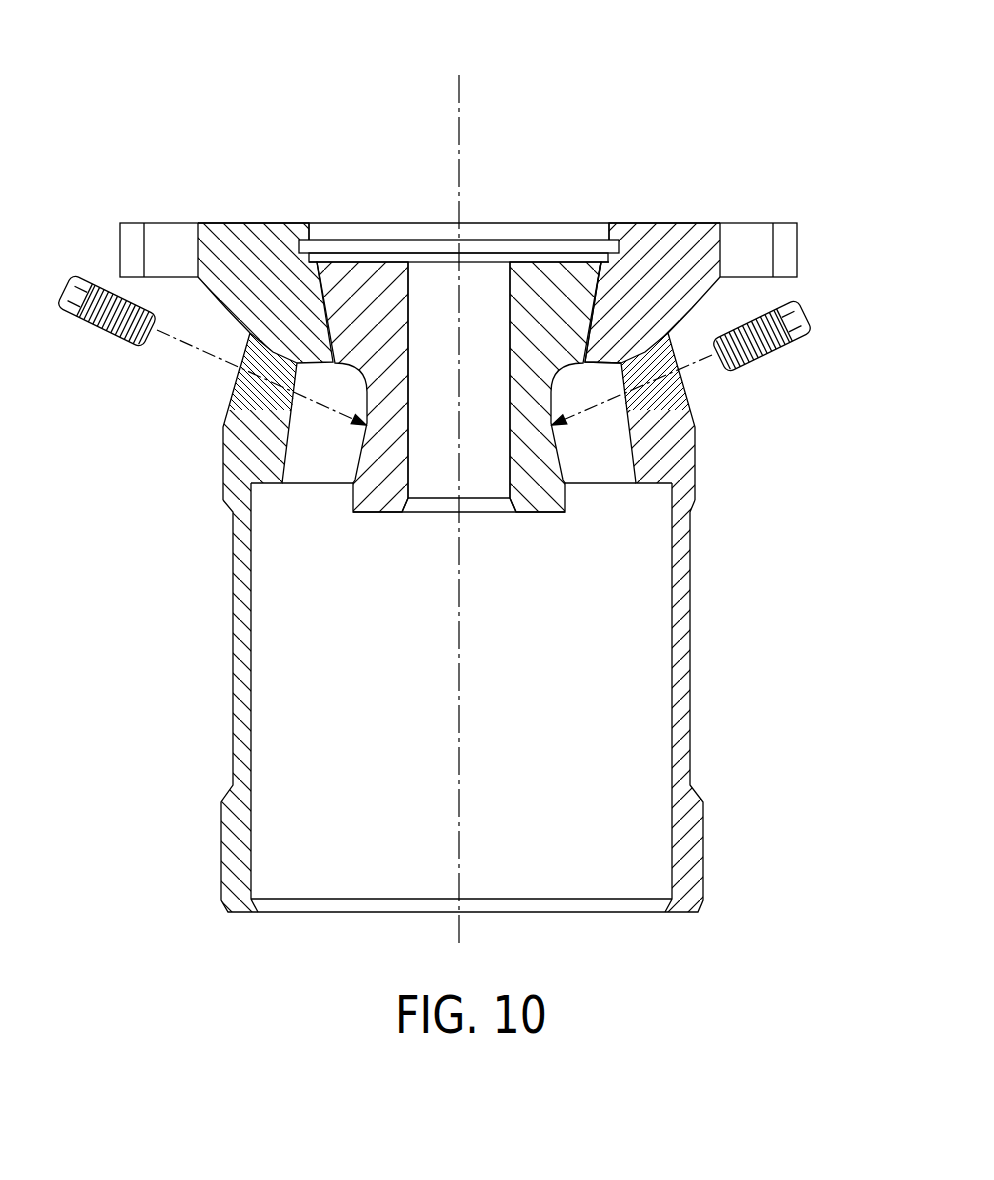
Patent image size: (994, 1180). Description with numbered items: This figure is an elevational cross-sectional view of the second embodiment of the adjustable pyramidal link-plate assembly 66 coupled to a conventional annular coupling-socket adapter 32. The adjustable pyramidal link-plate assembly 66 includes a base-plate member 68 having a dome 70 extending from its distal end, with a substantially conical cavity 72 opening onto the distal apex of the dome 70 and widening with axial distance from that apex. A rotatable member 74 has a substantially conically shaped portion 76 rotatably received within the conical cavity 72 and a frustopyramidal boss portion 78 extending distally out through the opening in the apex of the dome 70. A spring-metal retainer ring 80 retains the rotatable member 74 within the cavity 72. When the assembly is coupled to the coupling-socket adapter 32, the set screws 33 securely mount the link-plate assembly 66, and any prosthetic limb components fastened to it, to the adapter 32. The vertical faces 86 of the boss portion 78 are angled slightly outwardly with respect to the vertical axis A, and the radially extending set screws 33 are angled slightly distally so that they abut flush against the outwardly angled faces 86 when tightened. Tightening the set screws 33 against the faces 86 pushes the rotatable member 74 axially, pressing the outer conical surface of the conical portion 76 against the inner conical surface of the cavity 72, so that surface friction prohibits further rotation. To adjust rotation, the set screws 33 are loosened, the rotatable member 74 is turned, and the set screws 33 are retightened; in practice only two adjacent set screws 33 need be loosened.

The adjustable pyramidal link-plate assembly 66 is at (571, 120).
The base-plate member 68 is at (218, 242).
The dome 70 is at (262, 300).
The conical cavity 72 is at (593, 285).
The rotatable member 74 is at (352, 282).
The conically shaped portion 76 is at (449, 332).
The frustopyramidal boss portion 78 is at (453, 551).
The retainer ring 80 is at (513, 248).
The vertical faces 86 is at (356, 457).
The annular coupling-socket adapter 32 is at (690, 437).
The set screws 33 is at (86, 330).
The vertical axis A is at (462, 766).